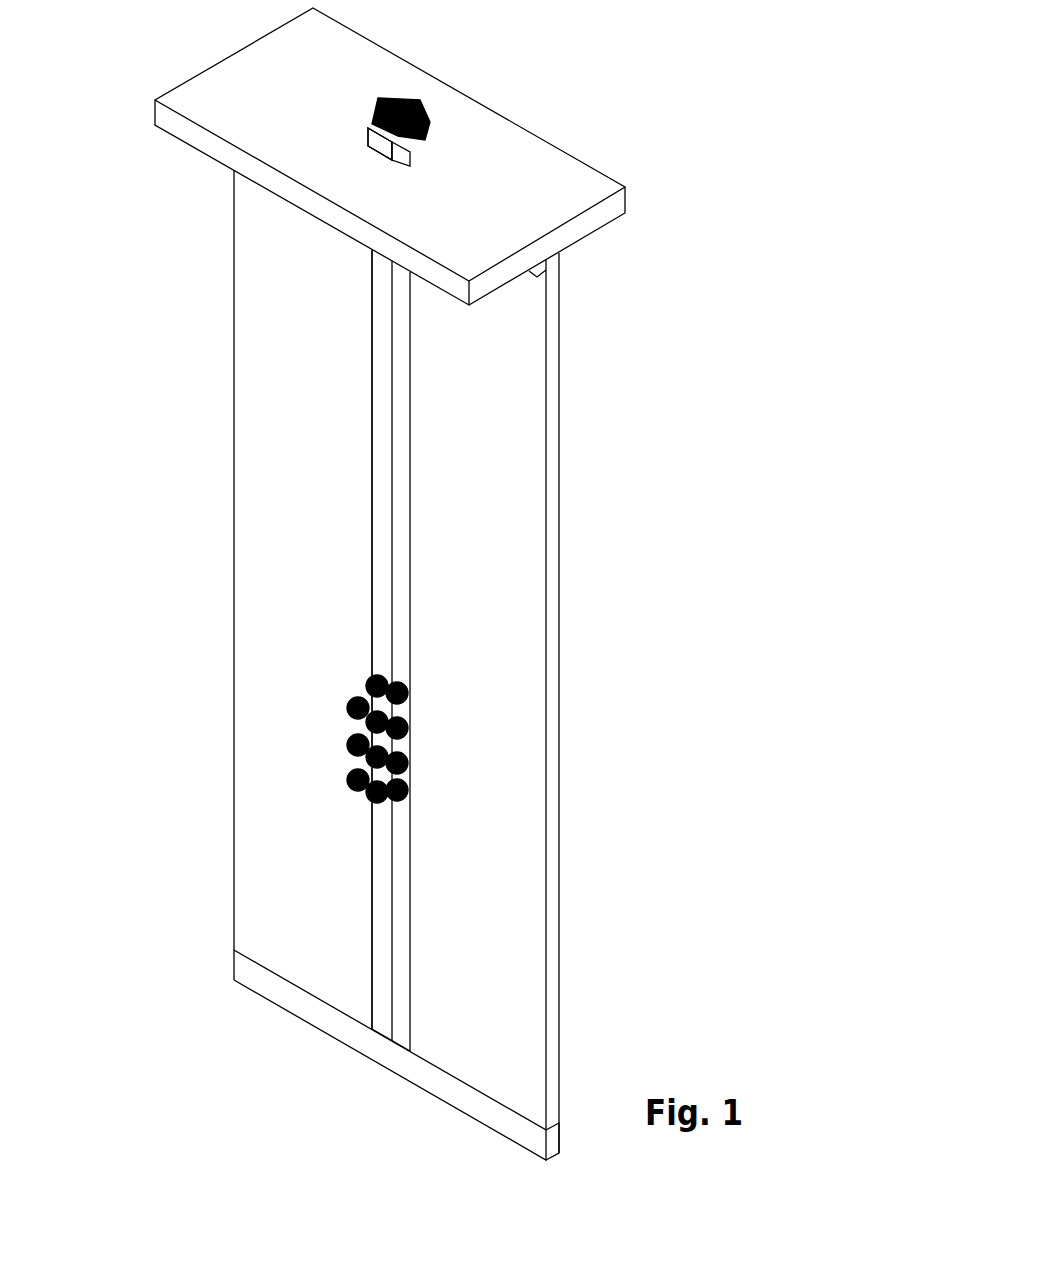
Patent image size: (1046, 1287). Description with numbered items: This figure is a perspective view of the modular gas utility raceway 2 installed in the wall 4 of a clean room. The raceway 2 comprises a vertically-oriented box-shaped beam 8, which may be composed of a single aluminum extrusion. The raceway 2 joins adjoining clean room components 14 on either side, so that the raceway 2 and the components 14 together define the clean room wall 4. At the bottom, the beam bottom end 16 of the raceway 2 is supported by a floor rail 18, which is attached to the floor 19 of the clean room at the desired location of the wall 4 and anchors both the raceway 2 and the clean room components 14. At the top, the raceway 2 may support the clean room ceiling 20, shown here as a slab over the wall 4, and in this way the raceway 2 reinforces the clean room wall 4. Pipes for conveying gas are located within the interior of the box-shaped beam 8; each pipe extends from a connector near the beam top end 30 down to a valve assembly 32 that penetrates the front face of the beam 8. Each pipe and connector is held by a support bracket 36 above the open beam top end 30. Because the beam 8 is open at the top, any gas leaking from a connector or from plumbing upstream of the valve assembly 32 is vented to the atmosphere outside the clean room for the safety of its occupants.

The modular gas utility raceway 2 is at (378, 325).
The wall 4 is at (543, 320).
The box-shaped beam 8 is at (378, 366).
The clean room components 14 is at (265, 555).
The beam bottom end 16 is at (395, 1023).
The floor rail 18 is at (257, 975).
The floor 19 is at (201, 1087).
The clean room ceiling 20 is at (568, 195).
The beam top end 30 is at (376, 127).
The valve assembly 32 is at (350, 709).
The support bracket 36 is at (423, 118).